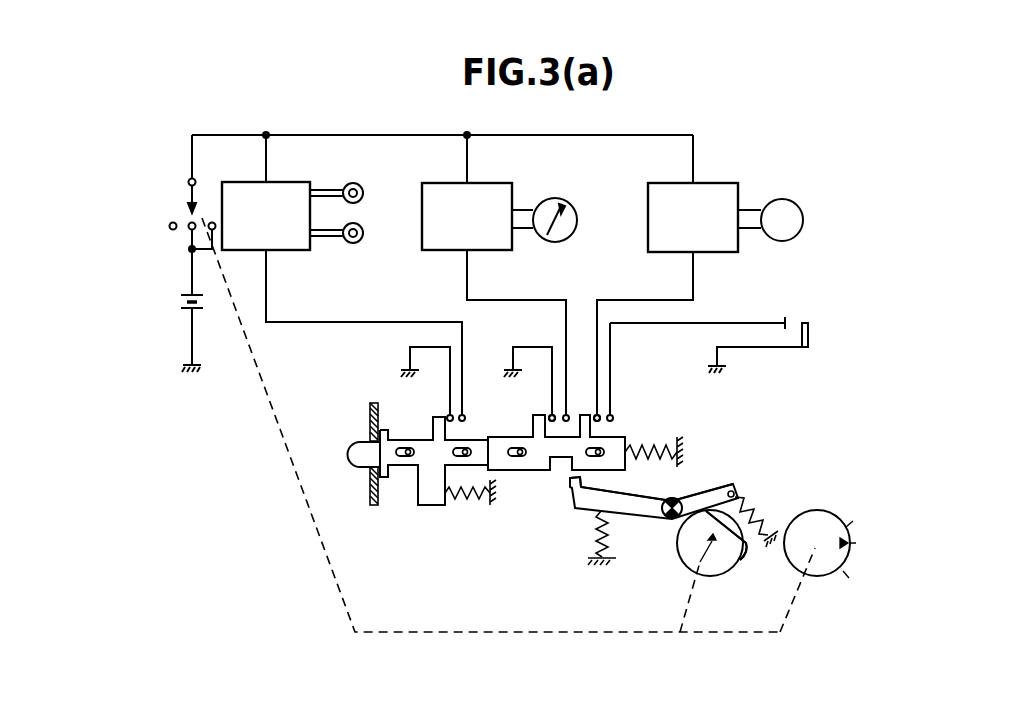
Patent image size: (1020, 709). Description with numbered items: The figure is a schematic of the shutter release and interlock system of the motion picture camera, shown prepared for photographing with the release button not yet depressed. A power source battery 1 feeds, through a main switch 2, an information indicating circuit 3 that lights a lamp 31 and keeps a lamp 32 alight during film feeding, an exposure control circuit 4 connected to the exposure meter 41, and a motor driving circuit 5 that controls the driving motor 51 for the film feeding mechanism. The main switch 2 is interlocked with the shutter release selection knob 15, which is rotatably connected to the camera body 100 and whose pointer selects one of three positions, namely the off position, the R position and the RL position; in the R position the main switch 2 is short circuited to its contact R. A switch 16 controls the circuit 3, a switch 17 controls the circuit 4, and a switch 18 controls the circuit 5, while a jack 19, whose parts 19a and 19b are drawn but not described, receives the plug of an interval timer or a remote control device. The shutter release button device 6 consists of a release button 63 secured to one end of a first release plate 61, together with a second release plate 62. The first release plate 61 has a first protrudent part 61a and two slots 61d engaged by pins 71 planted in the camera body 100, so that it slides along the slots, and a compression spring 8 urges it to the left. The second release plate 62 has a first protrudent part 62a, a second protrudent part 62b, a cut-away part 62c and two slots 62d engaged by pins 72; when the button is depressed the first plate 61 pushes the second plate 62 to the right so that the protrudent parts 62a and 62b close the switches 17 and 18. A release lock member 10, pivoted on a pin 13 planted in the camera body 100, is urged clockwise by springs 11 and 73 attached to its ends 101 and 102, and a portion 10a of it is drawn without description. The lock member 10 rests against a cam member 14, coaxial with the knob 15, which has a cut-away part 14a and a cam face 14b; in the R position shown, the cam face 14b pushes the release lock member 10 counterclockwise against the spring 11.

The power source battery 1 is at (181, 301).
The main switch 2 is at (190, 187).
The information indicating circuit 3 is at (246, 193).
The lamp 31 is at (351, 184).
The lamp 32 is at (366, 226).
The exposure control circuit 4 is at (491, 190).
The exposure meter 41 is at (557, 200).
The motor driving circuit 5 is at (722, 190).
The driving motor 51 is at (790, 200).
The shutter release button device 6 is at (599, 497).
The first release plate 61 is at (432, 457).
The first protrudent part 61a is at (434, 424).
The slots 61d is at (402, 447).
The second release plate 62 is at (540, 455).
The first protrudent part 62a is at (549, 412).
The second protrudent part 62b is at (592, 412).
The cut-away part 62c is at (560, 471).
The slots 62d is at (514, 446).
The release button 63 is at (356, 442).
The pins 71 is at (410, 458).
The pins 72 is at (519, 458).
The compression spring 8 is at (456, 496).
The camera body 100 is at (373, 501).
The switch 16 is at (452, 412).
The switch 17 is at (565, 412).
The switch 18 is at (608, 412).
The jack 19 is at (810, 326).
The switch contact 19a is at (786, 346).
The switch contact 19b is at (794, 332).
The release lock member 10 is at (625, 506).
The end of release lock member 101 is at (652, 498).
The end of release lock member 102 is at (742, 494).
The hook end of lever 10a is at (569, 490).
The compression spring 11 is at (610, 550).
The pin 13 is at (684, 502).
The spring 73 is at (752, 521).
The cam member 14 is at (681, 560).
The cut-away part 14a is at (744, 546).
The cam face 14b is at (735, 566).
The shutter release selection knob 15 is at (818, 577).